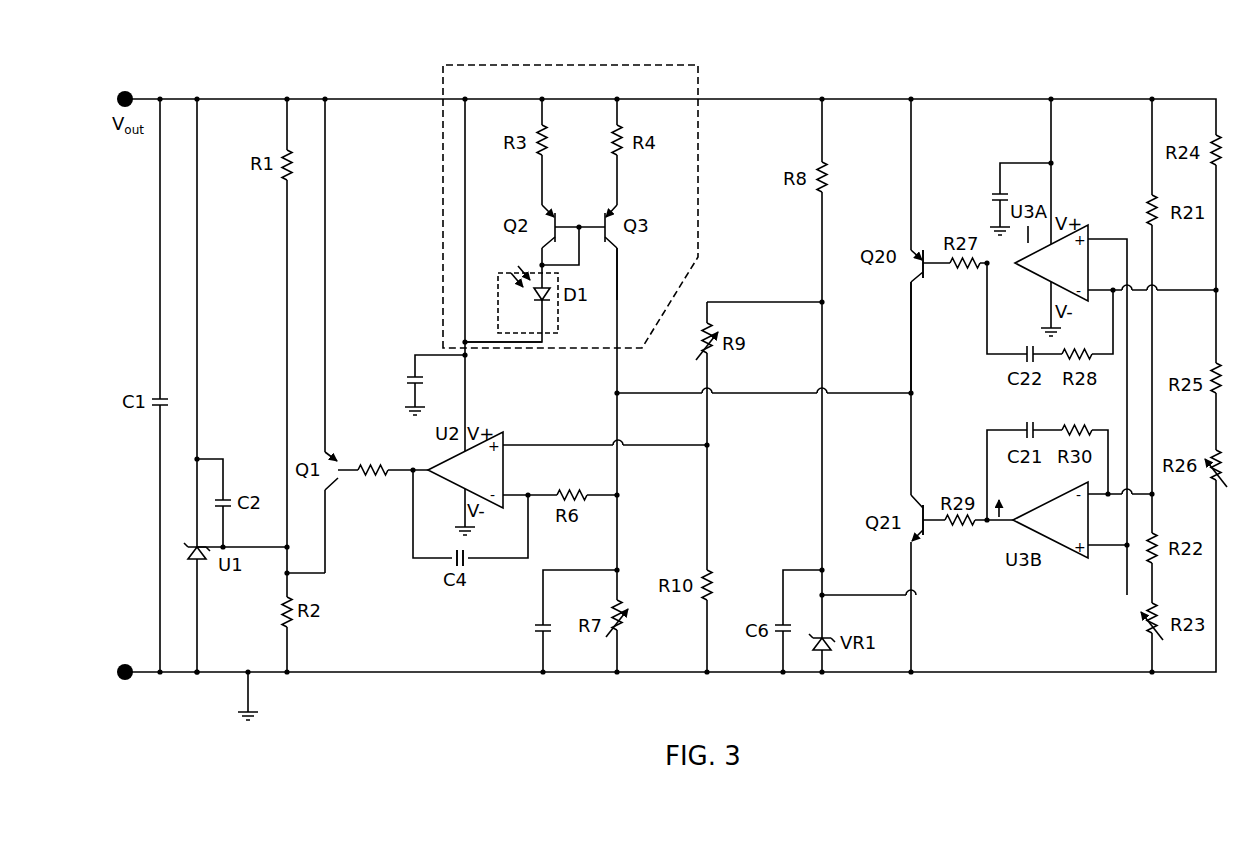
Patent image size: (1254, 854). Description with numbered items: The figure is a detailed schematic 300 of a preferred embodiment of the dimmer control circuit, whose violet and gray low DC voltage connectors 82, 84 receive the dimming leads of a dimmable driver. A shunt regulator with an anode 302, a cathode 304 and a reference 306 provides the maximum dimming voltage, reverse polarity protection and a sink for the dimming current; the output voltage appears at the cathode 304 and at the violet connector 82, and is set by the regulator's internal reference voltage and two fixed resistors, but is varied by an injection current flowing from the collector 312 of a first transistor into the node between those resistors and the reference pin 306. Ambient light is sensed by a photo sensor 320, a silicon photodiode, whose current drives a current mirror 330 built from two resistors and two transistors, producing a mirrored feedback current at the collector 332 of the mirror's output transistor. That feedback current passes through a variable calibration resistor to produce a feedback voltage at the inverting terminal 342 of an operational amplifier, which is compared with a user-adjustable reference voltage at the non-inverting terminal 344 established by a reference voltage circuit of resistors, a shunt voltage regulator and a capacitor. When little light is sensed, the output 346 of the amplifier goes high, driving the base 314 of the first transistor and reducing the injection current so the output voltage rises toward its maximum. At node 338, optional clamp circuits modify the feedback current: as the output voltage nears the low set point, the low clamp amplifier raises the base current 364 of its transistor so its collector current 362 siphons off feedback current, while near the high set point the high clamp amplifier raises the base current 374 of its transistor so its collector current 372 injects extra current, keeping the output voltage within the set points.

The violet low DC voltage connector 82 is at (130, 93).
The gray low DC voltage connector 84 is at (130, 665).
The detailed schematic 300 is at (797, 33).
The anode 302 is at (197, 672).
The cathode 304 is at (197, 459).
The reference 306 is at (193, 540).
The collector 312 is at (327, 555).
The base 314 is at (345, 474).
The photo sensor 320 is at (545, 350).
The current mirror 330 is at (698, 72).
The collector 332 is at (620, 281).
The node 338 is at (618, 393).
The inverting terminal 342 is at (528, 500).
The non-inverting terminal 344 is at (707, 445).
The output 346 is at (413, 470).
The collector current 362 is at (911, 562).
The base current 364 is at (928, 535).
The collector current 372 is at (911, 320).
The base current 374 is at (930, 280).